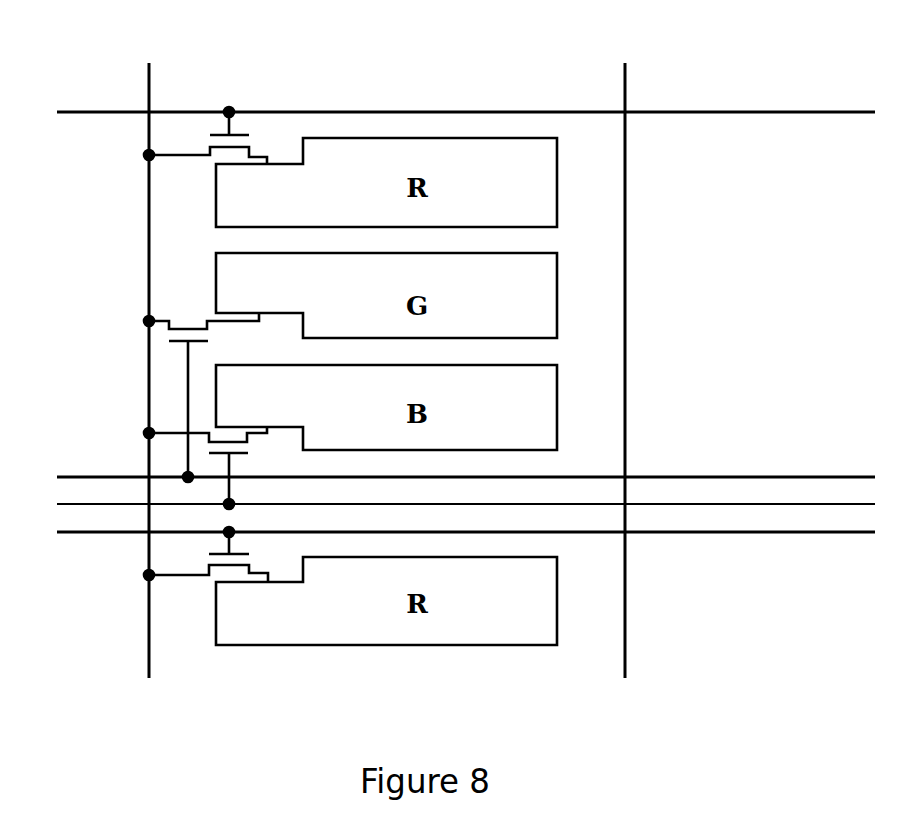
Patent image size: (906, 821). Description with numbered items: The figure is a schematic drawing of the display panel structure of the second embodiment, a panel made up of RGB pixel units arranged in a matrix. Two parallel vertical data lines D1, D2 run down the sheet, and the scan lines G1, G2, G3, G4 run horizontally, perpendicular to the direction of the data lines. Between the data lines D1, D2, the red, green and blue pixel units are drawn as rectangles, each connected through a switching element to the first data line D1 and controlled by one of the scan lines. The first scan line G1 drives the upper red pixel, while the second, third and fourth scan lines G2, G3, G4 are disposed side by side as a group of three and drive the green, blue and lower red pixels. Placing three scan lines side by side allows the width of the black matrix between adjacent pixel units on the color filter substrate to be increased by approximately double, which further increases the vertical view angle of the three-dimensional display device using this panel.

The data line D1 is at (148, 349).
The data line D2 is at (623, 349).
The scan line G1 is at (449, 113).
The scan line G2 is at (449, 478).
The scan line G3 is at (449, 505).
The scan line G4 is at (449, 533).